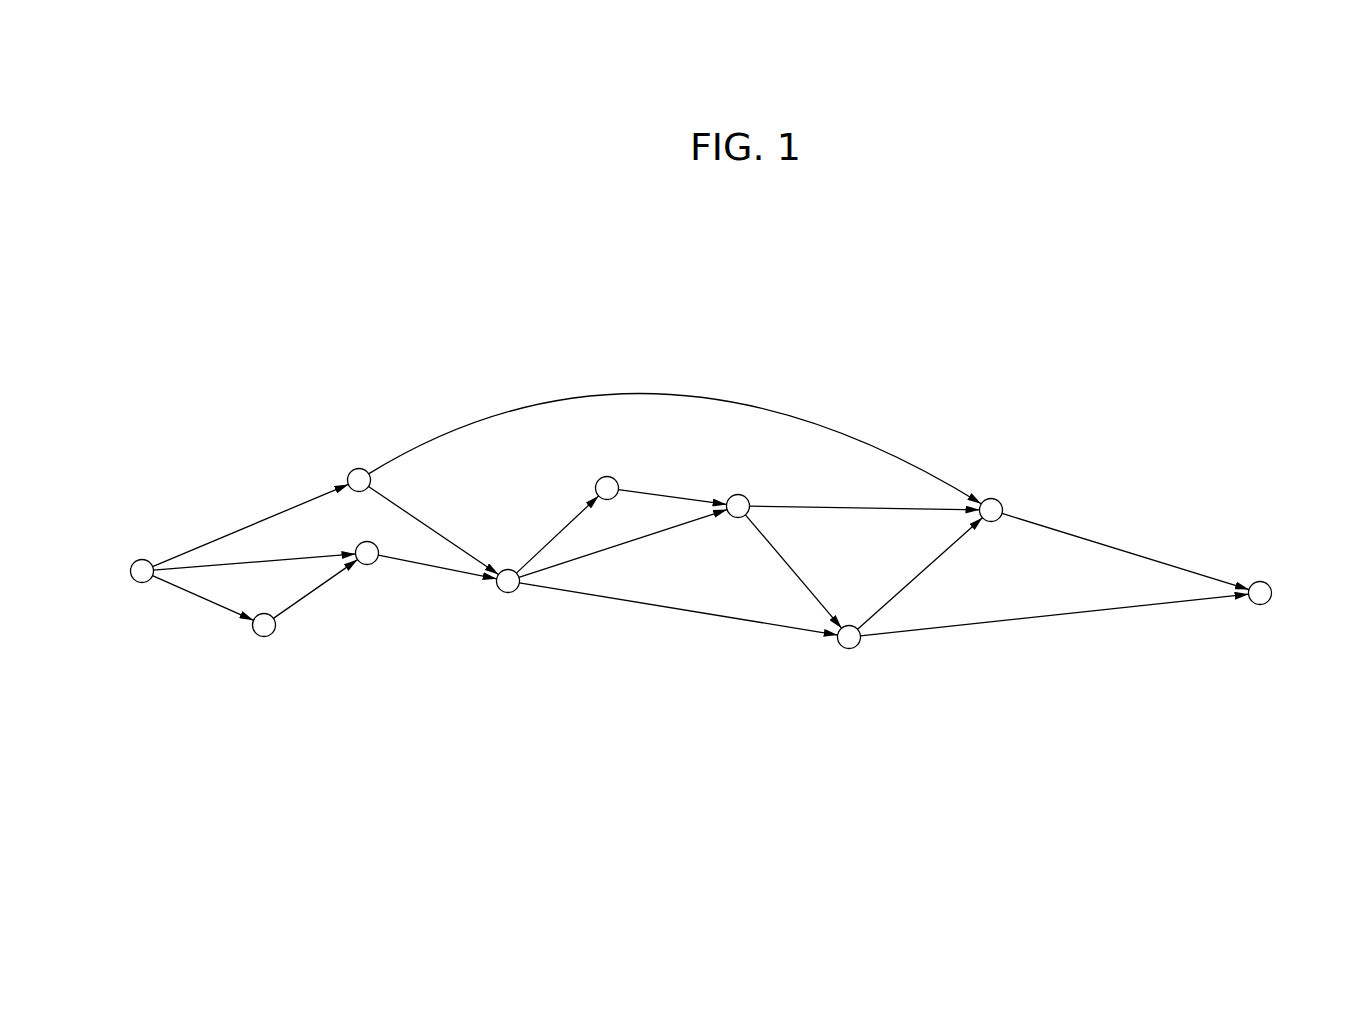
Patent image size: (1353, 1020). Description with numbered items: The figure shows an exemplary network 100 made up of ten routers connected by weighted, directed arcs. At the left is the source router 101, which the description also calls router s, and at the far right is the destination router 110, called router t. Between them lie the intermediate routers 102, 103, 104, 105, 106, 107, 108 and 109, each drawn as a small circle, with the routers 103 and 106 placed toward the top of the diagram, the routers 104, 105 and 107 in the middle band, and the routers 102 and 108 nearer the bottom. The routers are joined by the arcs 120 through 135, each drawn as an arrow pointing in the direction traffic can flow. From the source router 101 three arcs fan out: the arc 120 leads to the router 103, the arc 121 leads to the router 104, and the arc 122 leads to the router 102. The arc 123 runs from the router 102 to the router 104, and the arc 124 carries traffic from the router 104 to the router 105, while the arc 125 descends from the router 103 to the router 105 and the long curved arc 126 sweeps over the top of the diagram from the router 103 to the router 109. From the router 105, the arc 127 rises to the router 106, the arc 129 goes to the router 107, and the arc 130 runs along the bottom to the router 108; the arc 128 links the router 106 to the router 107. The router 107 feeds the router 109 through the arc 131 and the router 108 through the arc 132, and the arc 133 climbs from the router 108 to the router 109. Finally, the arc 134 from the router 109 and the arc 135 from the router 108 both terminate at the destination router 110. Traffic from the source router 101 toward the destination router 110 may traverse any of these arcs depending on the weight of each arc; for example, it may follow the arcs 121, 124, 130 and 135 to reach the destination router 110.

The network 100 is at (749, 215).
The source router 101 is at (139, 583).
The router 102 is at (264, 637).
The router 103 is at (357, 468).
The router 104 is at (367, 565).
The router 105 is at (507, 593).
The router 106 is at (605, 476).
The router 107 is at (737, 494).
The router 108 is at (849, 649).
The router 109 is at (988, 498).
The destination router 110 is at (1260, 605).
The arc 120 is at (241, 521).
The arc 121 is at (240, 562).
The arc 122 is at (198, 595).
The arc 123 is at (313, 592).
The arc 124 is at (415, 565).
The arc 125 is at (448, 539).
The arc 126 is at (518, 410).
The arc 127 is at (545, 544).
The arc 128 is at (677, 497).
The arc 129 is at (612, 546).
The arc 130 is at (707, 612).
The arc 131 is at (850, 507).
The arc 132 is at (786, 560).
The arc 133 is at (918, 573).
The arc 134 is at (1047, 531).
The arc 135 is at (1000, 626).